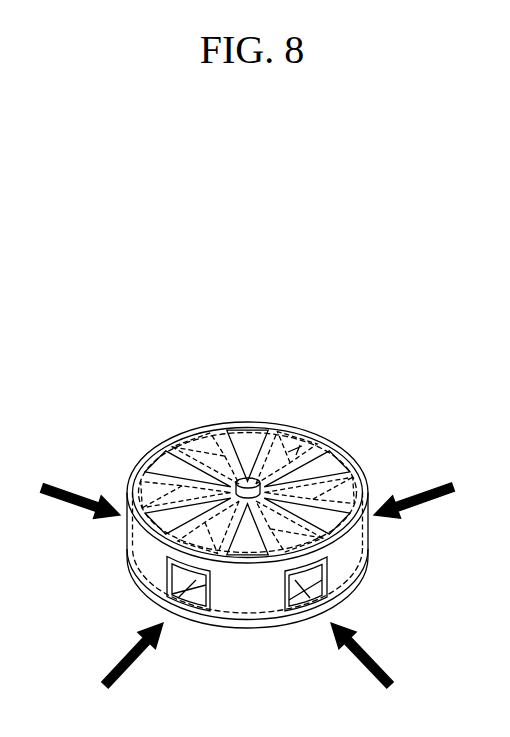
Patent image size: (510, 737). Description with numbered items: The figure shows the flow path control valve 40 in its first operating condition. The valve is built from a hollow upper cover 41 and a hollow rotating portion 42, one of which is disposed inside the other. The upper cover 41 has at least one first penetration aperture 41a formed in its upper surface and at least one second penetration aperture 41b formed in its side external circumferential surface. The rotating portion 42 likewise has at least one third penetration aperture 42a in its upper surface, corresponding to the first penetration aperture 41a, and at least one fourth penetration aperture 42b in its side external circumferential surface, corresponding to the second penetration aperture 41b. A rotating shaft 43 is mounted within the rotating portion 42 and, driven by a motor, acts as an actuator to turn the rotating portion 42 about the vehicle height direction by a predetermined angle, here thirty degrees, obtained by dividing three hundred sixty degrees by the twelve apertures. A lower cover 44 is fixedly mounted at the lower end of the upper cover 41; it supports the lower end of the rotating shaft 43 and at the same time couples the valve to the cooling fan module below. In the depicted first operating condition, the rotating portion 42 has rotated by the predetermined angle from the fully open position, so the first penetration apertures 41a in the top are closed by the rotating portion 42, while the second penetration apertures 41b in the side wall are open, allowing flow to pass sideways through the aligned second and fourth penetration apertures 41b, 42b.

The flow path control valve 40 is at (140, 391).
The upper cover 41 is at (127, 478).
The first penetration aperture 41a is at (250, 440).
The second penetration aperture 41b is at (200, 605).
The rotating portion 42 is at (338, 448).
The third penetration aperture 42a is at (288, 452).
The fourth penetration aperture 42b is at (297, 602).
The rotating shaft 43 is at (254, 478).
The lower cover 44 is at (137, 585).